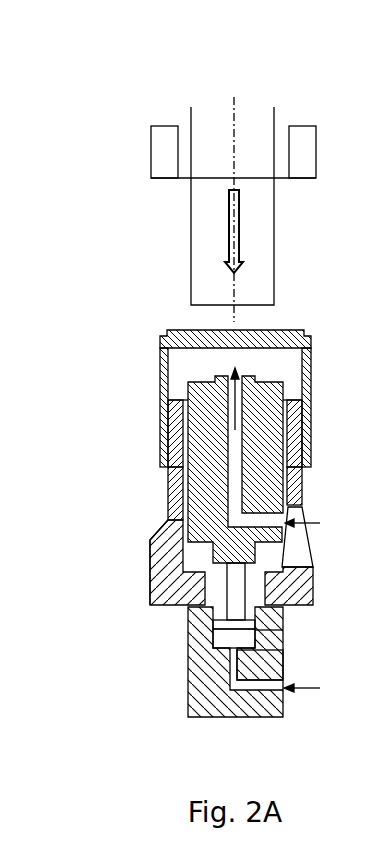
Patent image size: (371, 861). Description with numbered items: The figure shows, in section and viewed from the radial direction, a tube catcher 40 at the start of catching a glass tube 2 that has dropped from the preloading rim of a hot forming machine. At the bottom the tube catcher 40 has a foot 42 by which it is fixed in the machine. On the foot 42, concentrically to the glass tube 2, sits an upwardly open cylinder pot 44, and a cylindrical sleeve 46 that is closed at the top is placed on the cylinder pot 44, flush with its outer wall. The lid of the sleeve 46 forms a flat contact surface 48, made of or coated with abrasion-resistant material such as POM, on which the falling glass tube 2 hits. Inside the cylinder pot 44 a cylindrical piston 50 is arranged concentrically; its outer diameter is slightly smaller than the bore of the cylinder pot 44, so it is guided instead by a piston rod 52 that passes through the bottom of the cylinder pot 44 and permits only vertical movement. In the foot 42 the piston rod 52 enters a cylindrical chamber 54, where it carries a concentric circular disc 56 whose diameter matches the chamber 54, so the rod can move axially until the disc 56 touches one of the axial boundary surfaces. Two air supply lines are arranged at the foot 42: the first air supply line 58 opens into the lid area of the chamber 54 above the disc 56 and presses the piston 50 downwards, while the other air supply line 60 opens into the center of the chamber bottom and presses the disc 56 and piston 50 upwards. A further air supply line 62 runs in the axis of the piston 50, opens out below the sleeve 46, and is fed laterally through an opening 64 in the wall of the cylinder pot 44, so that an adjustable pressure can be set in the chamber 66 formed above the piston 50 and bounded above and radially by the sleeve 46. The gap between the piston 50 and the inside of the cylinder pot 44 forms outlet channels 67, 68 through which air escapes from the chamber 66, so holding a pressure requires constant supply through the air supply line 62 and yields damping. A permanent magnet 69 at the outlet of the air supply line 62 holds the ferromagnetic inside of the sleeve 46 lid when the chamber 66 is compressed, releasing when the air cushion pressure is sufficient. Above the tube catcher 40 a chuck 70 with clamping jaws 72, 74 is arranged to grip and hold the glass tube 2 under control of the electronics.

The glass tube 2 is at (191, 228).
The tube catcher 40 is at (130, 458).
The foot 42 is at (188, 665).
The cylinder pot 44 is at (162, 497).
The sleeve 46 is at (158, 365).
The contact surface 48 is at (290, 333).
The piston 50 is at (150, 554).
The piston rod 52 is at (229, 600).
The chamber 54 is at (220, 646).
The disc 56 is at (232, 625).
The first air supply line 58 is at (265, 626).
The second air supply line 60 is at (284, 700).
The air supply line 62 is at (232, 463).
The opening 64 is at (290, 528).
The chamber 66 is at (193, 363).
The outlet channel 67 is at (165, 428).
The outlet channel 68 is at (298, 422).
The magnet 69 is at (248, 373).
The chuck 70 is at (305, 126).
The clamping jaw 72 is at (162, 126).
The clamping jaw 74 is at (292, 126).